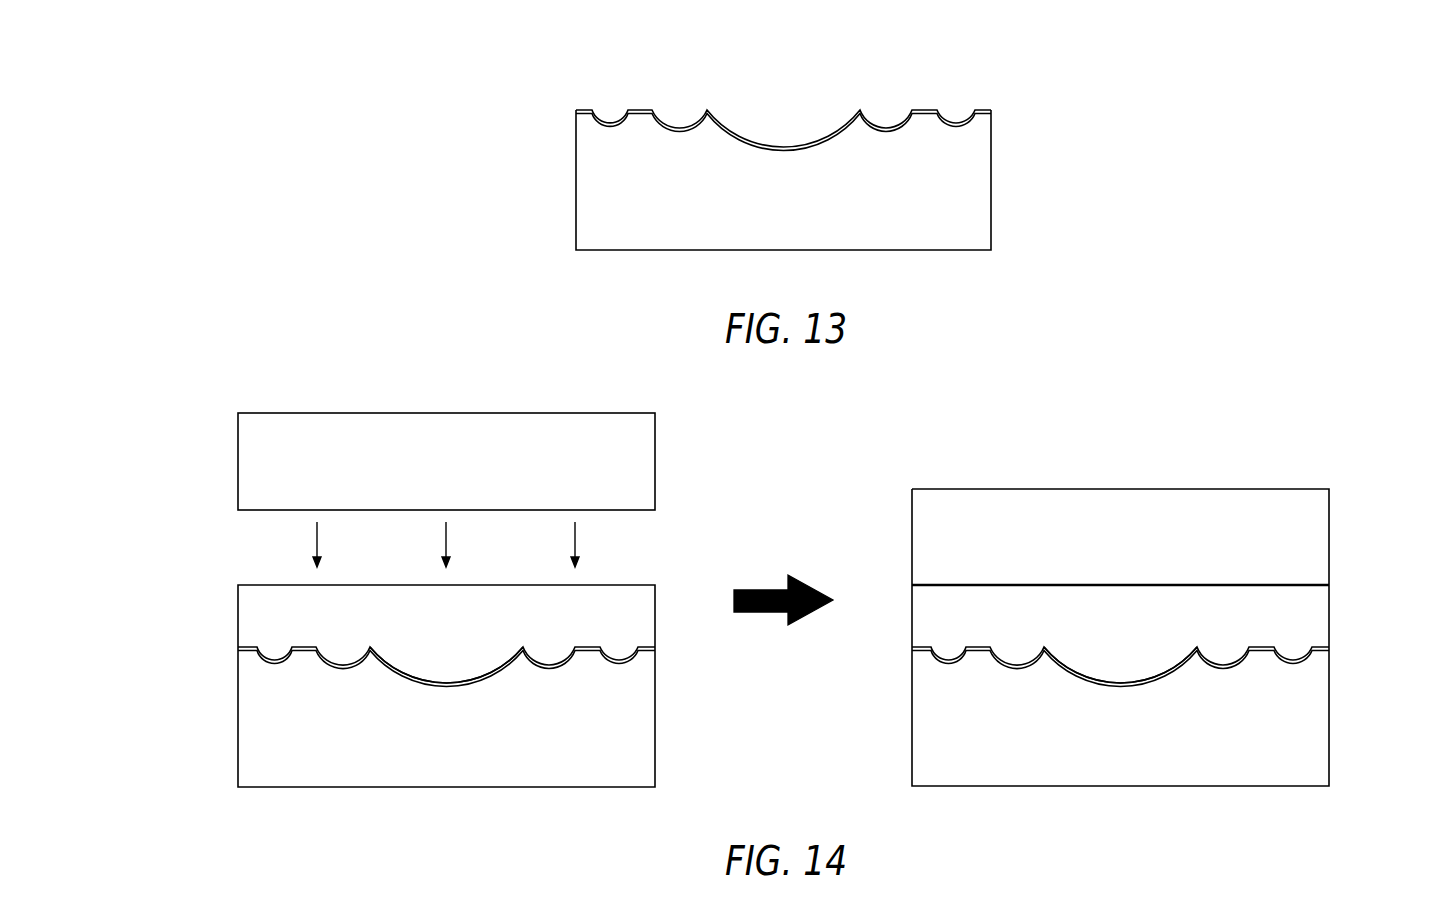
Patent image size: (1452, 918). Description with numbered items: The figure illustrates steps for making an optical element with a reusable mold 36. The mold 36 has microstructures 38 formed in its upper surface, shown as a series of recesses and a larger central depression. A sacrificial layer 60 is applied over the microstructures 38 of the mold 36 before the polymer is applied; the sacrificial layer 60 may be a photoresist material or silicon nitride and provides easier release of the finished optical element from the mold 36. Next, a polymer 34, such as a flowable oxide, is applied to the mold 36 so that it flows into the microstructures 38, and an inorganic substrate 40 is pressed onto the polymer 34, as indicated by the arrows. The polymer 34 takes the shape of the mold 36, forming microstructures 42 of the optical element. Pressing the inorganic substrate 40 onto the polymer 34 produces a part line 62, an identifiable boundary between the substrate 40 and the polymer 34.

In FIG. 14, the polymer 34 is at (238, 617).
In FIG. 13, the mold 36 is at (582, 183).
In FIG. 14, the mold 36 is at (238, 727).
In FIG. 13, the microstructures 38 is at (800, 103).
In FIG. 14, the microstructures 38 is at (491, 681).
In FIG. 14, the inorganic substrate 40 is at (238, 456).
In FIG. 14, the microstructures 42 is at (450, 665).
In FIG. 13, the sacrificial layer 60 is at (757, 147).
In FIG. 14, the sacrificial layer 60 is at (417, 684).
In FIG. 14, the part line 62 is at (1107, 582).